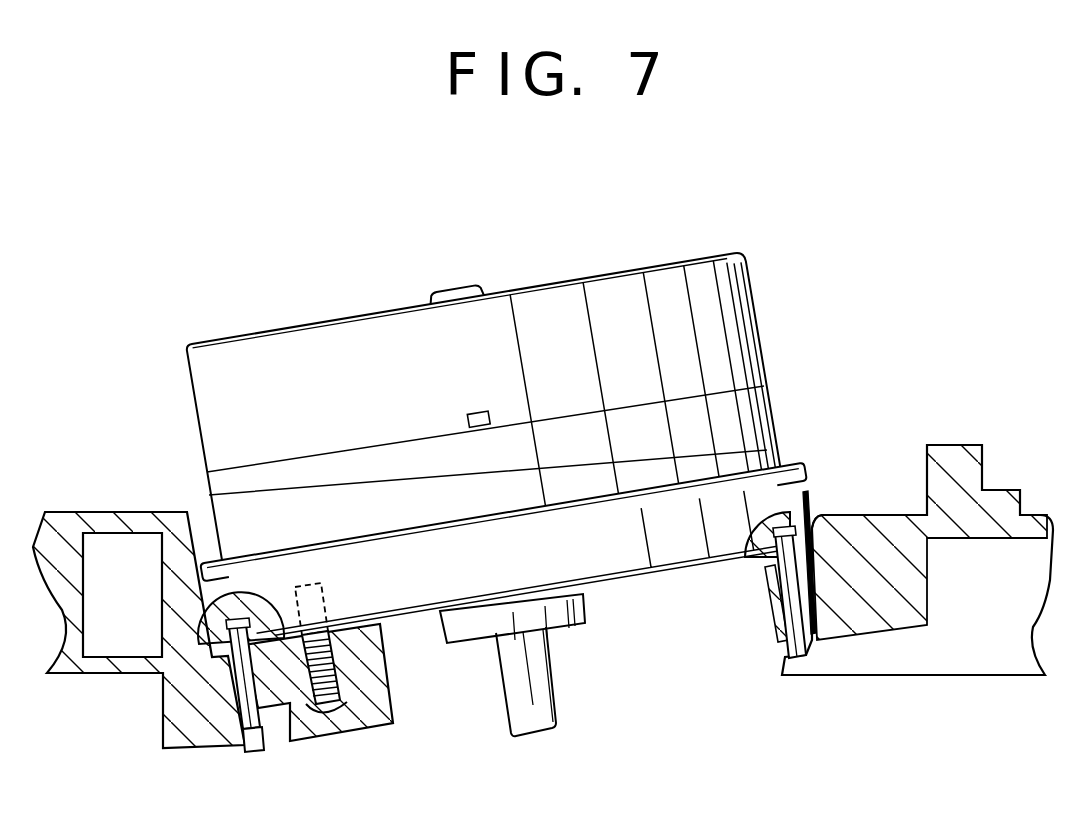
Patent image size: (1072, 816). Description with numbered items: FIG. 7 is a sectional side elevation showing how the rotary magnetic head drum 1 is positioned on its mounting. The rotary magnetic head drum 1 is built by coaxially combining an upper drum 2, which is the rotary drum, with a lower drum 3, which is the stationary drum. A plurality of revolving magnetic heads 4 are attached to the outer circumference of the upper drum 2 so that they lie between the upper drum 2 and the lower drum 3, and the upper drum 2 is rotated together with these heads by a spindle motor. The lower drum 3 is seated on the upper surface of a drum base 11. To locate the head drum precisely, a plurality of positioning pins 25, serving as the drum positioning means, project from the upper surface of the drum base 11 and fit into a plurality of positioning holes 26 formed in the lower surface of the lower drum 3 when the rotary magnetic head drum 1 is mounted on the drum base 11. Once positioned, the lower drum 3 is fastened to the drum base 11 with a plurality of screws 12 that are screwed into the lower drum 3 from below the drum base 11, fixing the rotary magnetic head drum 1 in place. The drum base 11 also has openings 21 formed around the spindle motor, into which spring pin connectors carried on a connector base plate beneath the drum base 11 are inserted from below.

The rotary magnetic head drum 1 is at (674, 255).
The upper drum 2 is at (738, 342).
The lower drum 3 is at (735, 435).
The revolving magnetic heads 4 is at (482, 412).
The drum base 11 is at (166, 708).
The screws 12 is at (337, 712).
The openings 21 is at (388, 664).
The positioning pins 25 is at (240, 706).
The positioning holes 26 is at (236, 625).